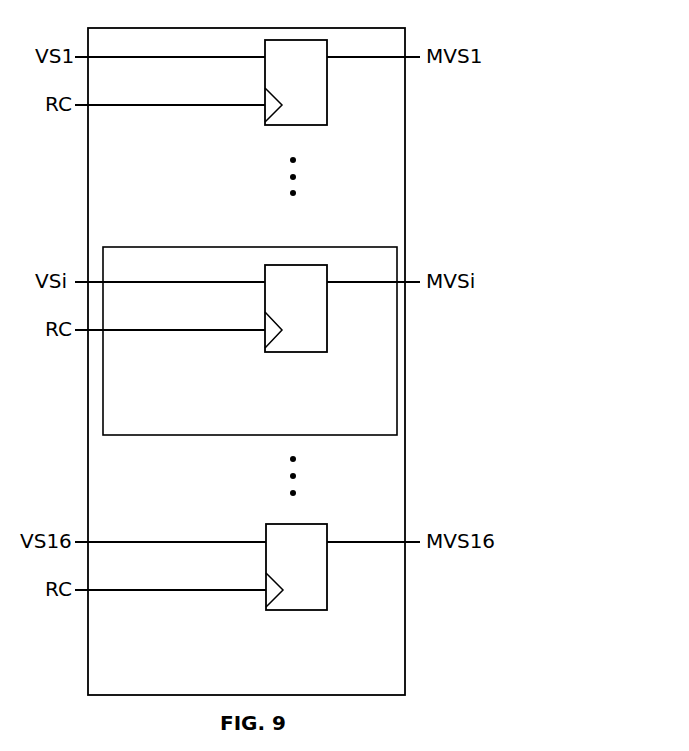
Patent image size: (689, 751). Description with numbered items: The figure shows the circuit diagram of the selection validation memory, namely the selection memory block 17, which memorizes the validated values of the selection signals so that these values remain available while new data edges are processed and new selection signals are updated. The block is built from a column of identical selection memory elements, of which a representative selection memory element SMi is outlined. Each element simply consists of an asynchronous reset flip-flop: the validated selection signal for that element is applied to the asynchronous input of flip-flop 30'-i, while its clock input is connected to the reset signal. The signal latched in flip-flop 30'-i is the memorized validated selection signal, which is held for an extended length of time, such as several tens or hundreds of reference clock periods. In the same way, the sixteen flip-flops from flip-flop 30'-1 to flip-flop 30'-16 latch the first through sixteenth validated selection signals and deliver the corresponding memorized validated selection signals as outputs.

The selection memory block 17 is at (558, 56).
The asynchronous reset flip-flop 30'-1 is at (334, 82).
The asynchronous reset flip-flop 30'-i is at (331, 308).
The asynchronous reset flip-flop 30'-16 is at (331, 578).
The selection memory element SMi is at (380, 247).